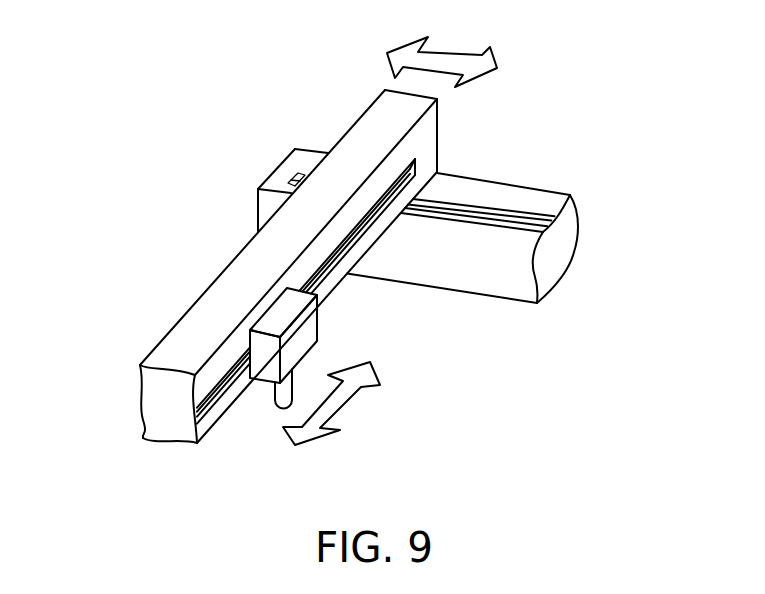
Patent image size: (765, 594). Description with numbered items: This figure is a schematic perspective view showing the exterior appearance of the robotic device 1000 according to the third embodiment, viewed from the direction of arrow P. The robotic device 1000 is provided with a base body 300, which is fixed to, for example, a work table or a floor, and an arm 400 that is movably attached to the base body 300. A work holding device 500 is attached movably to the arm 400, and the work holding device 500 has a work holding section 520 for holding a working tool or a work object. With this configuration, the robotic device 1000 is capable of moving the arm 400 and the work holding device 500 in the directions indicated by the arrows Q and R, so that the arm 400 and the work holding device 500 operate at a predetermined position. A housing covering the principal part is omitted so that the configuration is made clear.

The robotic device 1000 is at (556, 79).
The base body 300 is at (508, 197).
The arm 400 is at (223, 302).
The work holding device 500 is at (310, 321).
The work holding section 520 is at (285, 398).